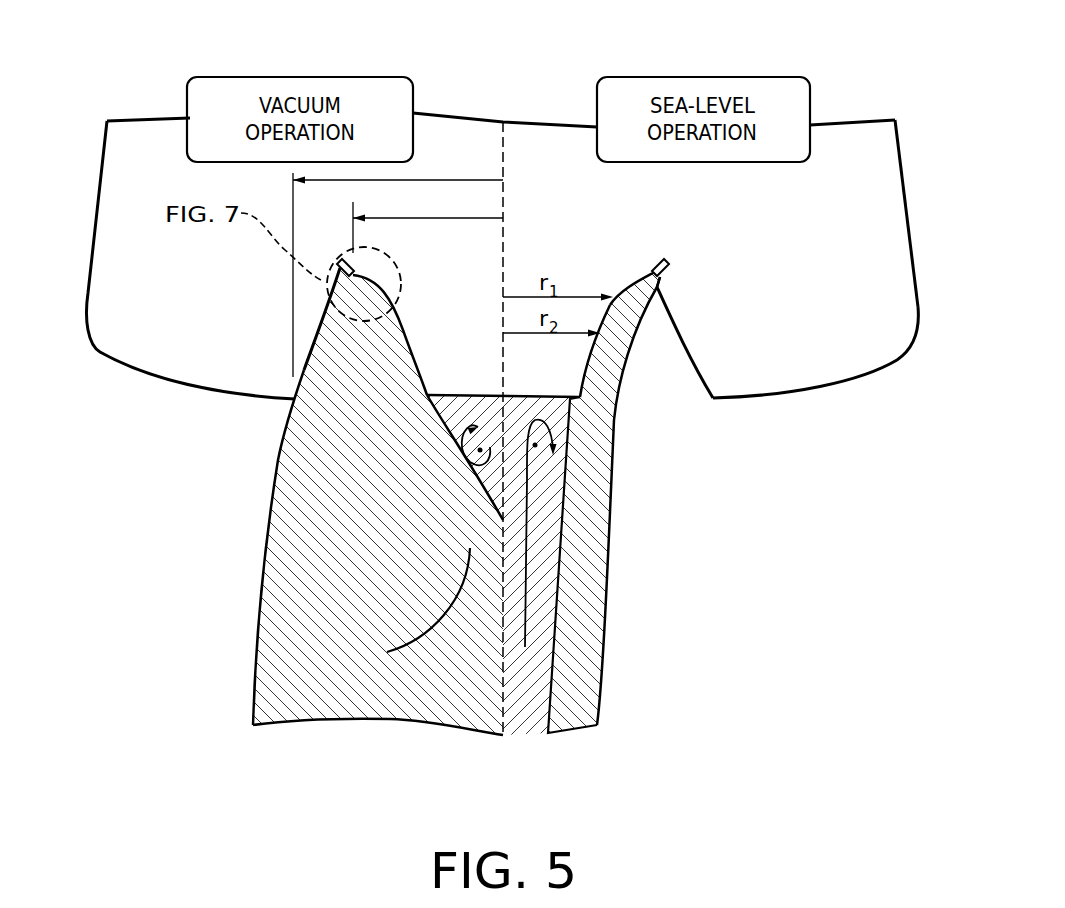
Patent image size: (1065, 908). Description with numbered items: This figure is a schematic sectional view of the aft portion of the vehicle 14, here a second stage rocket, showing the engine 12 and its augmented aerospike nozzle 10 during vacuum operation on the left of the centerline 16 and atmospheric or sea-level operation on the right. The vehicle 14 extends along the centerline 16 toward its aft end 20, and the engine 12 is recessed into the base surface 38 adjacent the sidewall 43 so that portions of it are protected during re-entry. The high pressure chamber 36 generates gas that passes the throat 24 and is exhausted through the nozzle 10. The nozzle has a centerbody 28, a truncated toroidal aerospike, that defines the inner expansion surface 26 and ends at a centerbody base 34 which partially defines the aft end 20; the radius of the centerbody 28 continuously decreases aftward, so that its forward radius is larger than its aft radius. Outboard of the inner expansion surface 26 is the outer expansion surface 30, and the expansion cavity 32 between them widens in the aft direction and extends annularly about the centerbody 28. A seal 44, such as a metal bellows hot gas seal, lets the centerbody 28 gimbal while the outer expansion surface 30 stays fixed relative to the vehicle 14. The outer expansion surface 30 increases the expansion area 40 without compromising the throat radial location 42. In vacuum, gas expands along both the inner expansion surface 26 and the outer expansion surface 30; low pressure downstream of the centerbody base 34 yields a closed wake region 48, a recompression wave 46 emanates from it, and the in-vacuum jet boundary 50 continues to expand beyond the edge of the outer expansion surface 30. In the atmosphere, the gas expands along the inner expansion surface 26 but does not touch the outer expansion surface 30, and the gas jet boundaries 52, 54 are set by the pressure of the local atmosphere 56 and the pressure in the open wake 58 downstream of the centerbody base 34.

The augmented aerospike nozzle 10 is at (213, 343).
The engine 12 is at (177, 273).
The vehicle 14 is at (97, 82).
The centerline 16 is at (500, 126).
The aft end 20 is at (833, 284).
The throat 24 is at (650, 273).
The inner expansion surface 26 is at (413, 376).
The centerbody 28 is at (548, 388).
The outer expansion surface 30 is at (697, 370).
The expansion cavity 32 is at (661, 349).
The centerbody base 34 is at (573, 408).
The high pressure chamber 36 is at (668, 262).
The base surface 38 is at (828, 388).
The expansion area 40 is at (487, 178).
The throat radial location 42 is at (487, 218).
The sidewall 43 is at (904, 177).
The seal 44 is at (667, 288).
The recompression wave 46 is at (403, 603).
The closed wake region 48 is at (480, 450).
The in-vacuum jet boundary 50 is at (258, 628).
The gas jet boundary 52 is at (550, 690).
The gas jet boundary 54 is at (603, 667).
The local atmosphere 56 is at (694, 664).
The open wake 58 is at (535, 445).